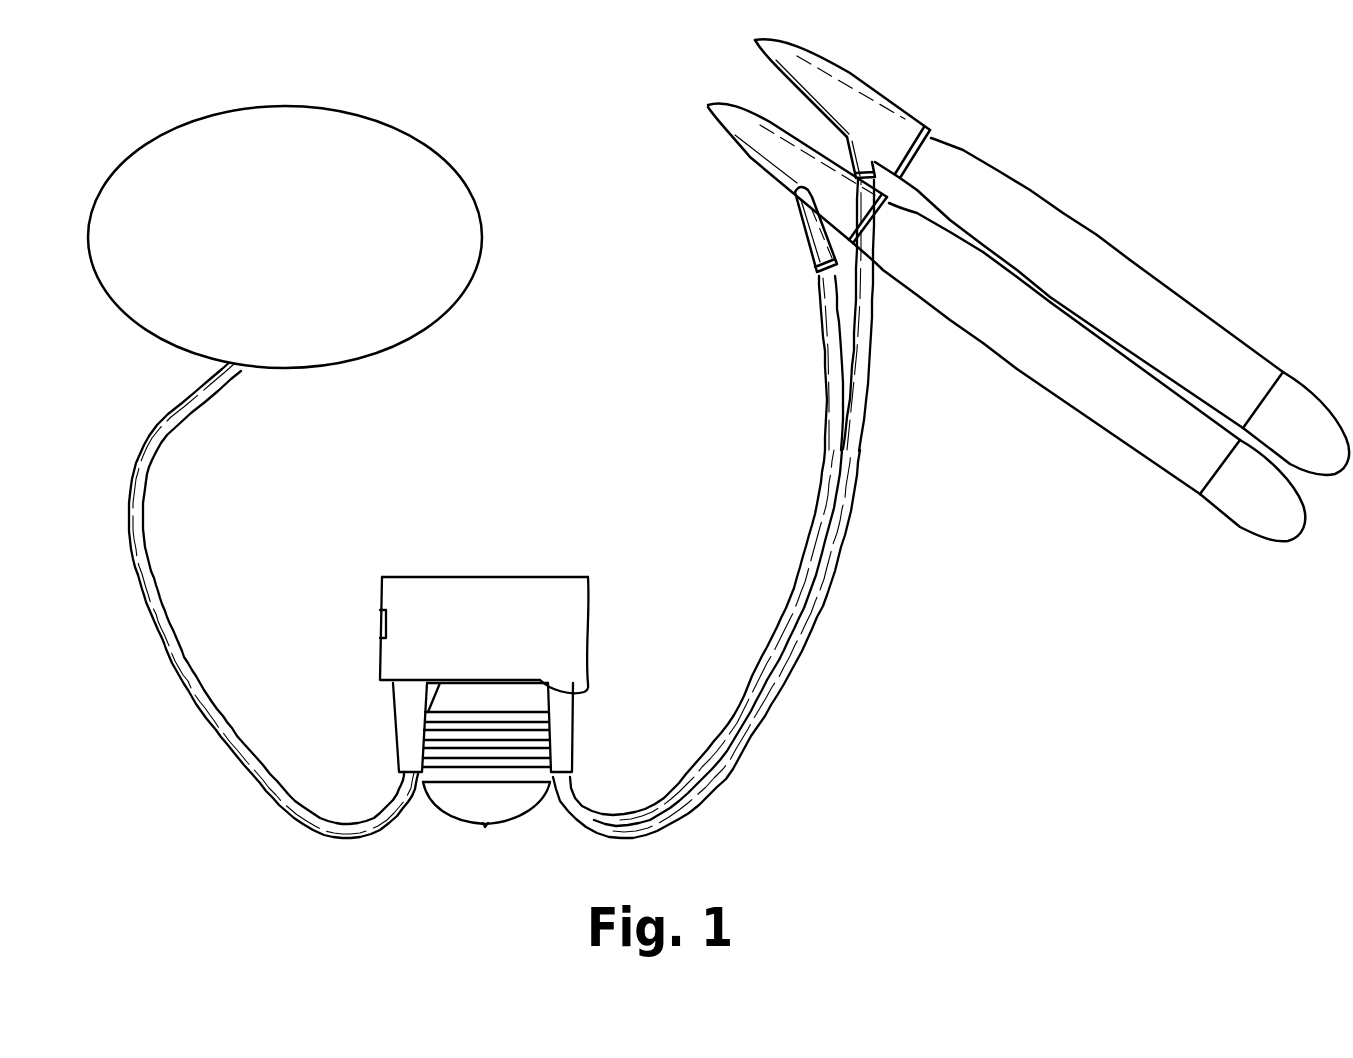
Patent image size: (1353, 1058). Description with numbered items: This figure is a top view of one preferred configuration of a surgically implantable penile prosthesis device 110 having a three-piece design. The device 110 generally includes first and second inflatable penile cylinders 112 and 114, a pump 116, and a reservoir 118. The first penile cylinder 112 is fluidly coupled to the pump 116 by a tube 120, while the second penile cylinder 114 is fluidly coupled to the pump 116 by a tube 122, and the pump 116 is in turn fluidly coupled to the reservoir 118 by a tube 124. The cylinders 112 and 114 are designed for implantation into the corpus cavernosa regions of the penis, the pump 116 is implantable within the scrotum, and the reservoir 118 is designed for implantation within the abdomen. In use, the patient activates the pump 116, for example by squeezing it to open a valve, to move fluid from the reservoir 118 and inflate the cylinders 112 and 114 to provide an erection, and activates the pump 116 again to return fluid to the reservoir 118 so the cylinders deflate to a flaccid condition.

The surgically implantable penile prosthesis device 110 is at (1232, 148).
The first inflatable penile cylinder 112 is at (943, 260).
The second inflatable penile cylinder 114 is at (1103, 279).
The pump 116 is at (372, 601).
The reservoir 118 is at (316, 155).
The tube 120 is at (833, 455).
The tube 122 is at (850, 468).
The tube 124 is at (147, 446).